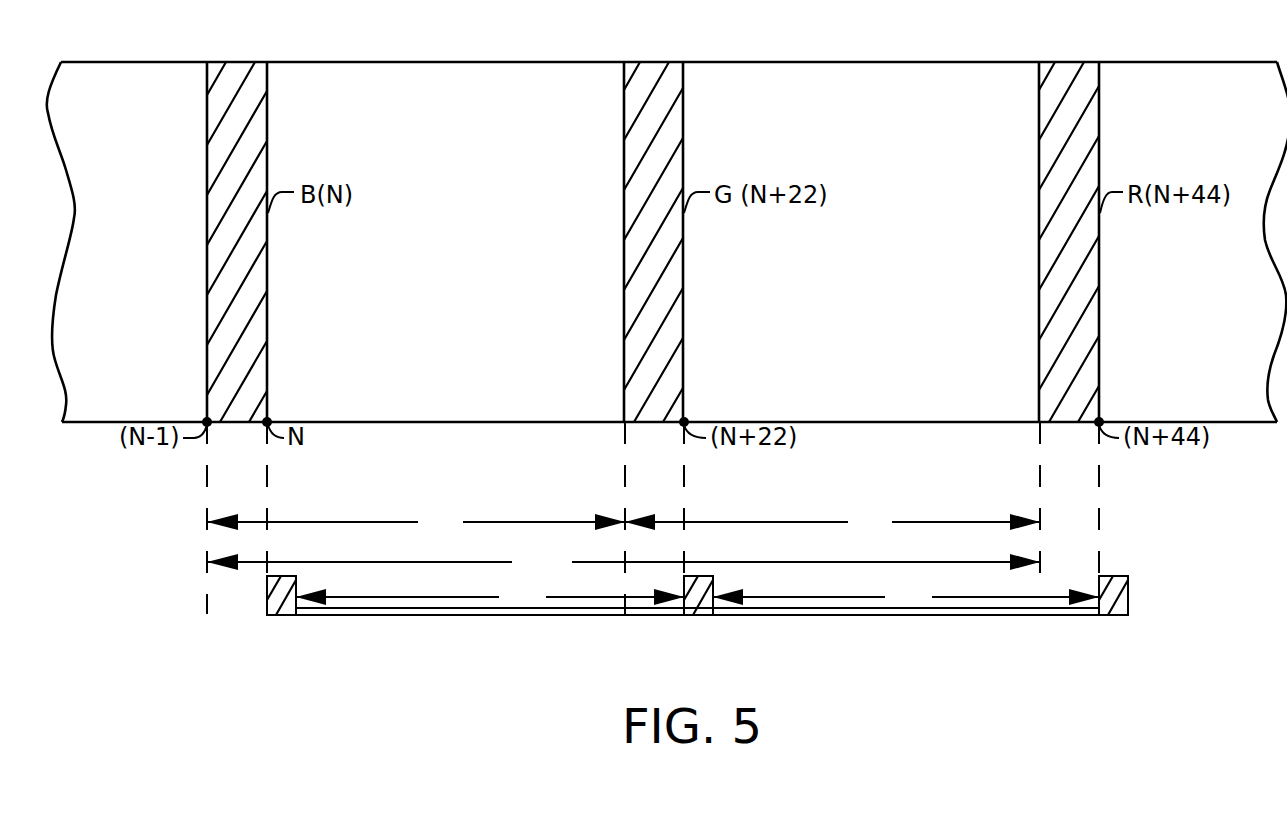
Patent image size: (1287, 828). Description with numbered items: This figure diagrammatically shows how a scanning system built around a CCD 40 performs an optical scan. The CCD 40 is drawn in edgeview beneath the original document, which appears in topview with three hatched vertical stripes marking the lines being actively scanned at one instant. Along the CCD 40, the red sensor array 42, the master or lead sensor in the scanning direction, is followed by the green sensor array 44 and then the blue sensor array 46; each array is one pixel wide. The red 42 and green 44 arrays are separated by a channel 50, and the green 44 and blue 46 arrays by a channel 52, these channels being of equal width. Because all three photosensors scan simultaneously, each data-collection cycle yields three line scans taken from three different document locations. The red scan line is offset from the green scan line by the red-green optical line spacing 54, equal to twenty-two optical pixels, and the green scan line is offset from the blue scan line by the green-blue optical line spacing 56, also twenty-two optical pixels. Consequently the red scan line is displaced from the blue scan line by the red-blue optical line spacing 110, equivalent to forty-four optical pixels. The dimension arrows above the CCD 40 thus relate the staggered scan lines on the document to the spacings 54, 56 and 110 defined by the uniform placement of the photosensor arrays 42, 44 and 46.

The CCD 40 is at (412, 616).
The red sensor array 42 is at (1130, 594).
The green sensor array 44 is at (690, 616).
The blue sensor array 46 is at (276, 616).
The channel 50 is at (906, 597).
The channel 52 is at (490, 597).
The red-green optical line spacing 54 is at (832, 522).
The green-blue optical line spacing 56 is at (416, 522).
The red-blue optical line spacing 110 is at (623, 562).